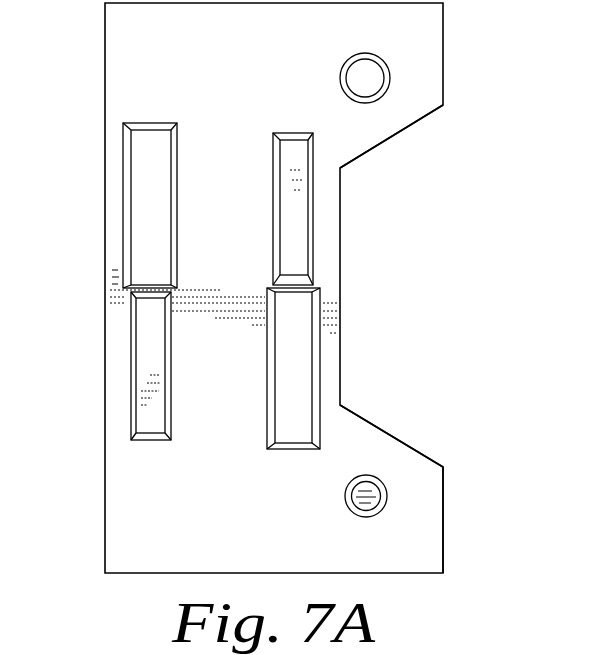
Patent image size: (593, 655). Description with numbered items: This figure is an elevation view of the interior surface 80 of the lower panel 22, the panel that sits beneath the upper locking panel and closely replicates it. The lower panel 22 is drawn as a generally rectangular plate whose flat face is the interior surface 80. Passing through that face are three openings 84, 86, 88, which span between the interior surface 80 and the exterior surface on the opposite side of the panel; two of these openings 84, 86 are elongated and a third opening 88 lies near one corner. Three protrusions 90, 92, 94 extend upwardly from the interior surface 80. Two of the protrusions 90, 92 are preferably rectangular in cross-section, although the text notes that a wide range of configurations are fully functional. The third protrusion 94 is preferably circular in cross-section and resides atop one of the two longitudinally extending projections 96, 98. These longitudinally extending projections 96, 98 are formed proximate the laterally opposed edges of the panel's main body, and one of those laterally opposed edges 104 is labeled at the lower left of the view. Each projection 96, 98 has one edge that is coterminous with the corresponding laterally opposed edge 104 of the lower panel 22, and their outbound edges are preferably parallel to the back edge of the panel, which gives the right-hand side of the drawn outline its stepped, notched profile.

The lower panel 22 is at (392, 577).
The interior surface 80 is at (200, 562).
The opening 84 is at (303, 360).
The opening 86 is at (145, 198).
The opening 88 is at (368, 71).
The protrusion 90 is at (297, 215).
The protrusion 92 is at (145, 367).
The protrusion 94 is at (372, 490).
The longitudinally extending projection 96 is at (440, 518).
The longitudinally extending projection 98 is at (440, 106).
The laterally opposed edge 104 is at (65, 654).